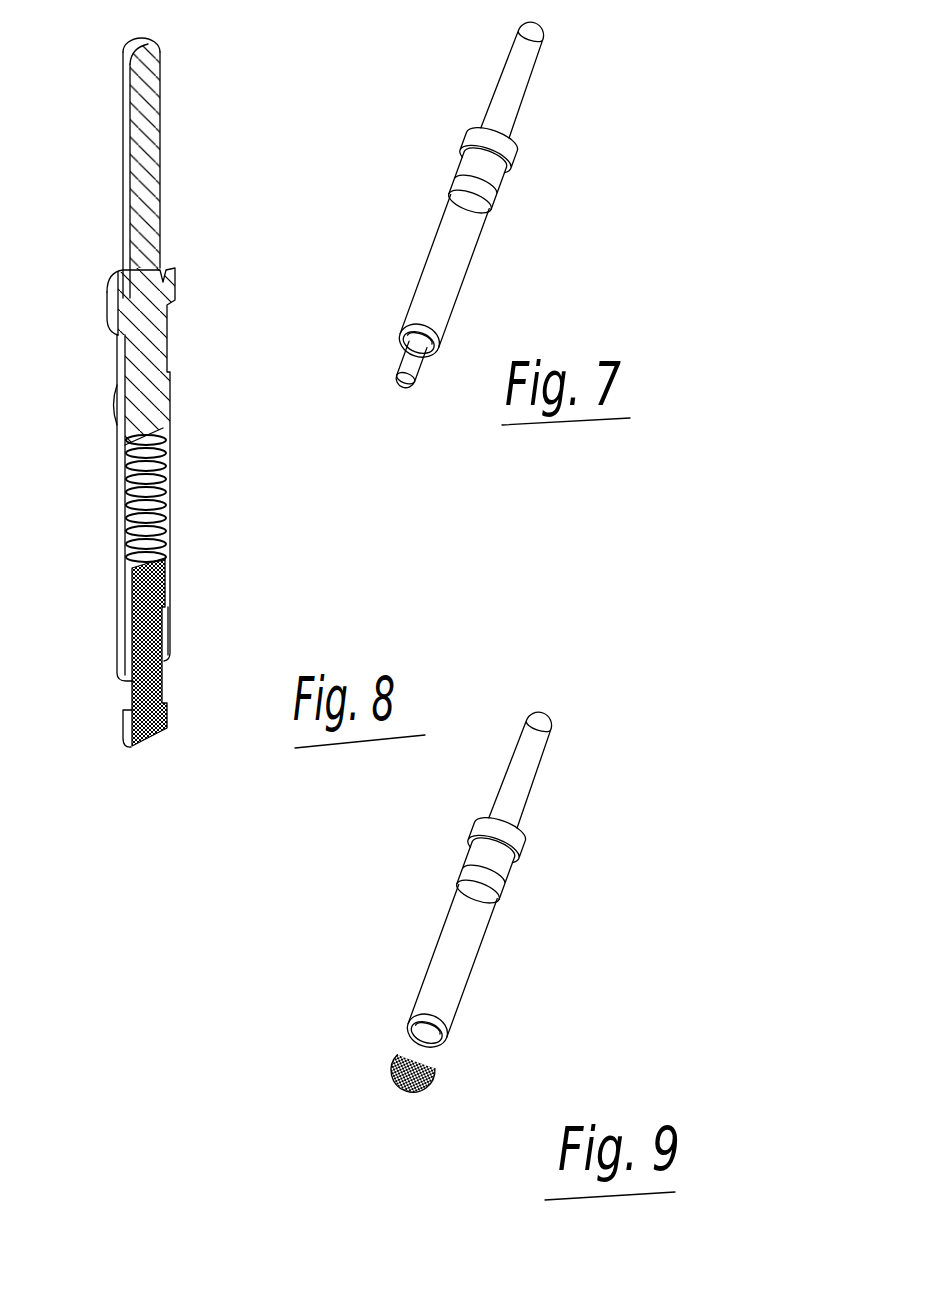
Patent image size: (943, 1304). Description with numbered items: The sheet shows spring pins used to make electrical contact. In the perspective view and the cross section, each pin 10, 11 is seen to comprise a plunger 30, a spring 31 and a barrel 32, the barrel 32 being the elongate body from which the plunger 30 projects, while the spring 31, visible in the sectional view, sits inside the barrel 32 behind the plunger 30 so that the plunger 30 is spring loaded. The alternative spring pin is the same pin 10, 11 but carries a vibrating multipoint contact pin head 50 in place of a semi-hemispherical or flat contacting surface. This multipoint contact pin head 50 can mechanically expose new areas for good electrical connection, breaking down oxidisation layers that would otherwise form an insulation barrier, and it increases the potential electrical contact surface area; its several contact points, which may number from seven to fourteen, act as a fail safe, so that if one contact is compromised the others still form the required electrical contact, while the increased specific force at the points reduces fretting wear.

In FIG. 7, the pin 10 is at (512, 241).
In FIG. 9, the pin 10 is at (469, 939).
In FIG. 7, the pin 11 is at (512, 241).
In FIG. 9, the pin 11 is at (469, 939).
In FIG. 7, the plunger 30 is at (404, 392).
In FIG. 8, the plunger 30 is at (150, 730).
In FIG. 8, the spring 31 is at (165, 478).
In FIG. 7, the barrel 32 is at (530, 68).
In FIG. 8, the barrel 32 is at (135, 170).
In FIG. 9, the vibrating multipoint contact pin head 50 is at (388, 1100).